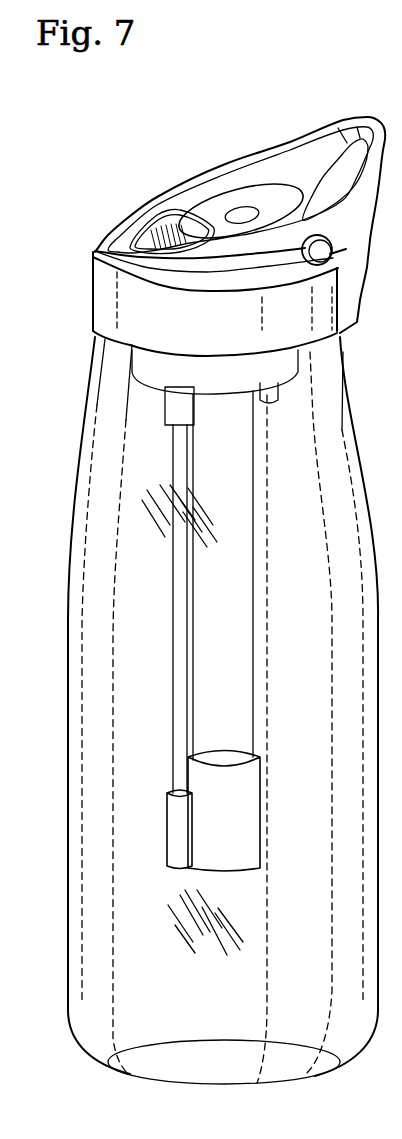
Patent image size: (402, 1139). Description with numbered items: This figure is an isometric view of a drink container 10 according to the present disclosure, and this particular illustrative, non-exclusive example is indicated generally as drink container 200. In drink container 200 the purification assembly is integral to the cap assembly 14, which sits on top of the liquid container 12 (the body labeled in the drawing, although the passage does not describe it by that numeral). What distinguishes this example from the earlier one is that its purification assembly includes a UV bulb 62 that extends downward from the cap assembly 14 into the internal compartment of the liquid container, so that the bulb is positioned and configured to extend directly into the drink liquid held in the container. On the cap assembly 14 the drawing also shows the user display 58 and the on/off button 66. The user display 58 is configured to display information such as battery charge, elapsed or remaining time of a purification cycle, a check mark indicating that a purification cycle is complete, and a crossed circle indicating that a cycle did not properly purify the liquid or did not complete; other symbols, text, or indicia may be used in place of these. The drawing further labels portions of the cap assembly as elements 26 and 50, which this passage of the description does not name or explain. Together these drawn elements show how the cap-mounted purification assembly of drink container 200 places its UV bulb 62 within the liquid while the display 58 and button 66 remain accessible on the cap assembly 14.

The drink container 10 is at (214, 73).
The bottle body 12 is at (67, 677).
The cap assembly 14 is at (171, 132).
The spout rim 26 is at (222, 165).
The cap base 50 is at (148, 170).
The user display 58 is at (157, 232).
The UV bulb 62 is at (236, 639).
The on/off button 66 is at (322, 248).
The drink container 200 is at (277, 97).